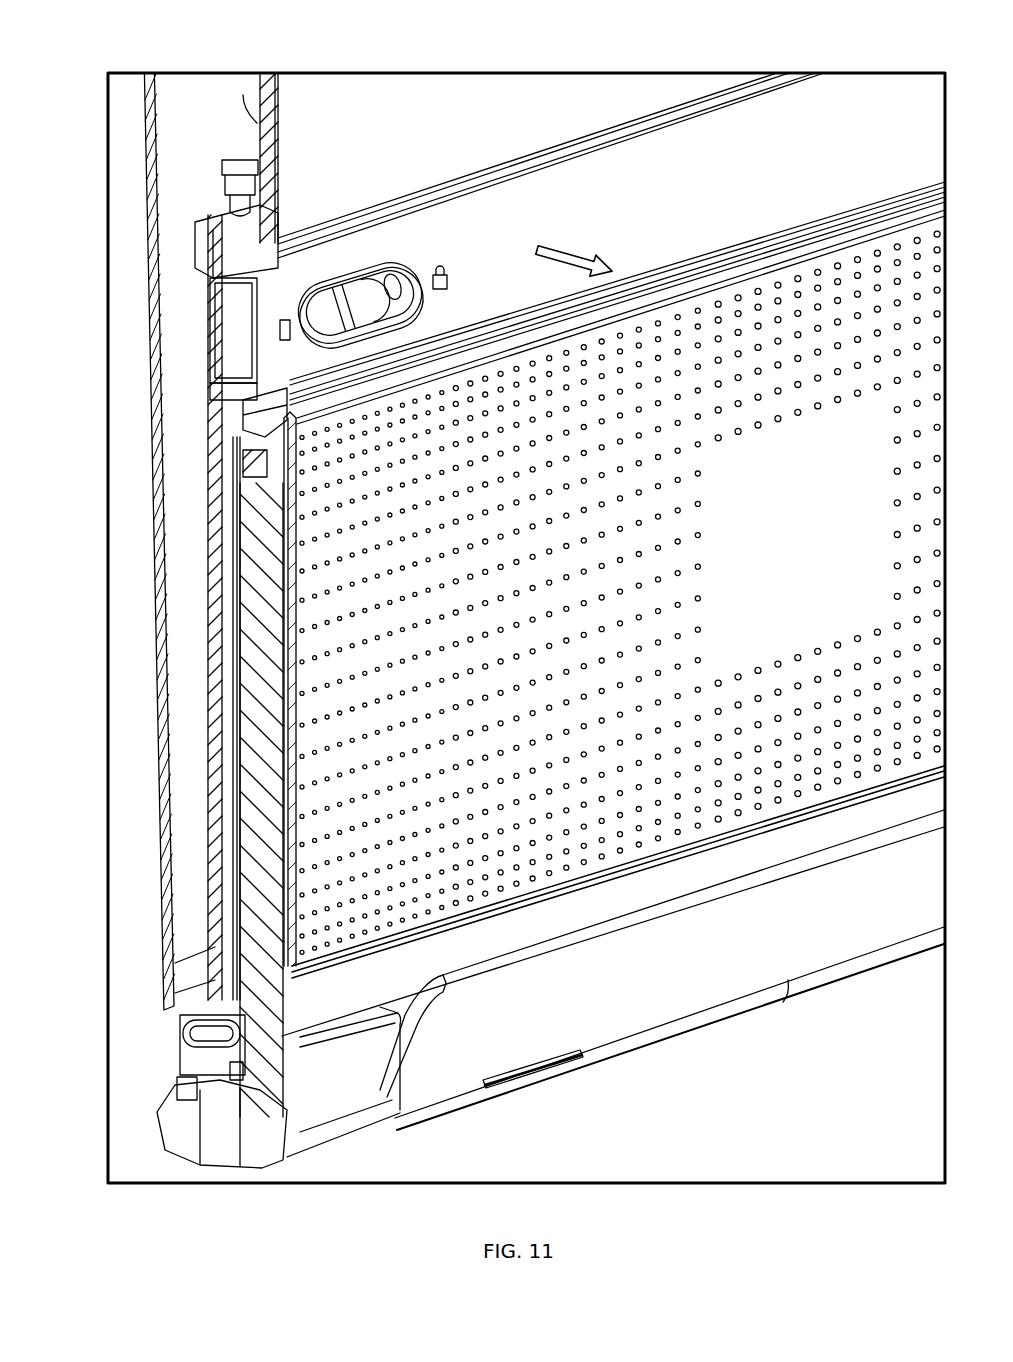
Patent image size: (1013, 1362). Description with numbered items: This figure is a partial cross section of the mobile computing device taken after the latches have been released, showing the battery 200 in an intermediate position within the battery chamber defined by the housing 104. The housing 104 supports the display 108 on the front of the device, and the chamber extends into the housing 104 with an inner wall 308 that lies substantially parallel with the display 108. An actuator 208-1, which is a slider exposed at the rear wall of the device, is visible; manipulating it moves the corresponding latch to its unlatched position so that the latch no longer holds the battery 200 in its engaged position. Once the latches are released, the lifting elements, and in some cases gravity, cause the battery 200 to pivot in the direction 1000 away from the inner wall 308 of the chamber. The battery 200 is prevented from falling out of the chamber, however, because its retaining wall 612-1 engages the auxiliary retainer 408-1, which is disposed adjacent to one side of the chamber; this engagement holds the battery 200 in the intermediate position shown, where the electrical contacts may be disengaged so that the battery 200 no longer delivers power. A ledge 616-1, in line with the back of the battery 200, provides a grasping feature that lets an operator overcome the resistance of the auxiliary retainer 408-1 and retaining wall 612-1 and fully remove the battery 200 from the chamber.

The housing 104 is at (642, 180).
The display 108 is at (158, 772).
The battery 200 is at (821, 562).
The actuator 208-1 is at (352, 268).
The inner wall 308 is at (213, 675).
The auxiliary retainer 408-1 is at (248, 407).
The retaining wall 612-1 is at (250, 428).
The ledge 616-1 is at (297, 432).
The direction 1000 is at (574, 246).